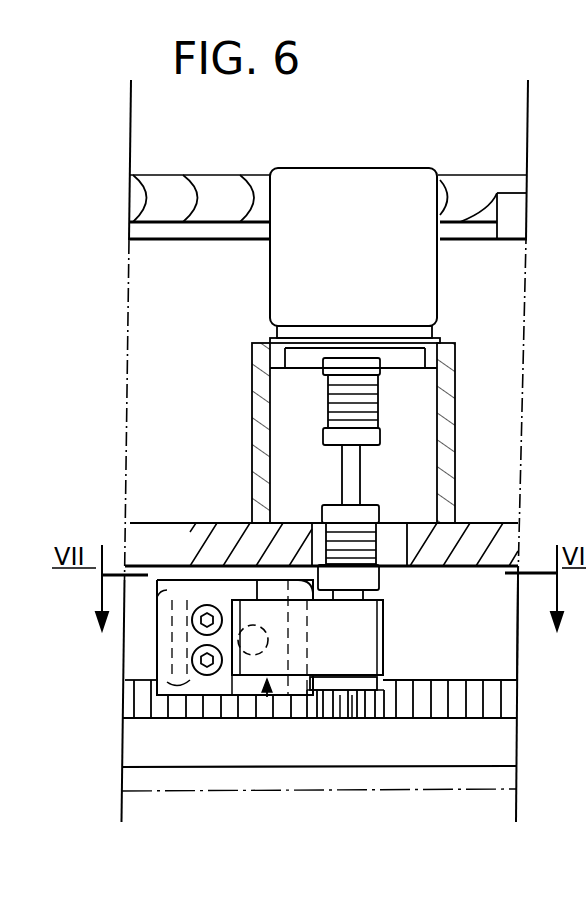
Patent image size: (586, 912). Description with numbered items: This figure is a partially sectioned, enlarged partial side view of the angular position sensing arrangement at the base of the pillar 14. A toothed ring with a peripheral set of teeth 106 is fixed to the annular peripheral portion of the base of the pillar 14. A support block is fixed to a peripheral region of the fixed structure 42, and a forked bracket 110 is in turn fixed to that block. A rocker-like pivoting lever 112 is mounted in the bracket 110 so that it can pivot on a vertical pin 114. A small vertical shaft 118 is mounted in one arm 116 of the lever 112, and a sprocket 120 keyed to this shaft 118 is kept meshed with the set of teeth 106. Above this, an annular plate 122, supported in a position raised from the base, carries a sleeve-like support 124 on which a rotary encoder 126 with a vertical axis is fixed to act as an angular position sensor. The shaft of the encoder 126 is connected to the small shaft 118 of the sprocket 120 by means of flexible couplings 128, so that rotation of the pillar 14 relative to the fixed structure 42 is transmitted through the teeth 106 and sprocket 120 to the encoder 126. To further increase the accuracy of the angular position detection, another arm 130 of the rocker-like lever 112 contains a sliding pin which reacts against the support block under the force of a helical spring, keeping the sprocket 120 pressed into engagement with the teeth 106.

The pillar 14 is at (225, 262).
The rotary encoder 126 is at (418, 197).
The sleeve-like support 124 is at (447, 463).
The flexible couplings 128 is at (320, 408).
The annular plate 122 is at (195, 560).
The forked bracket 110 is at (150, 592).
The arm of the lever 116 is at (355, 618).
The vertical pin 114 is at (312, 644).
The fixed structure 42 is at (493, 638).
The set of teeth 106 is at (165, 705).
The another arm of the lever 130 is at (250, 668).
The small vertical shaft 118 is at (362, 692).
The rocker-like pivoting lever 112 is at (267, 700).
The sprocket 120 is at (346, 705).